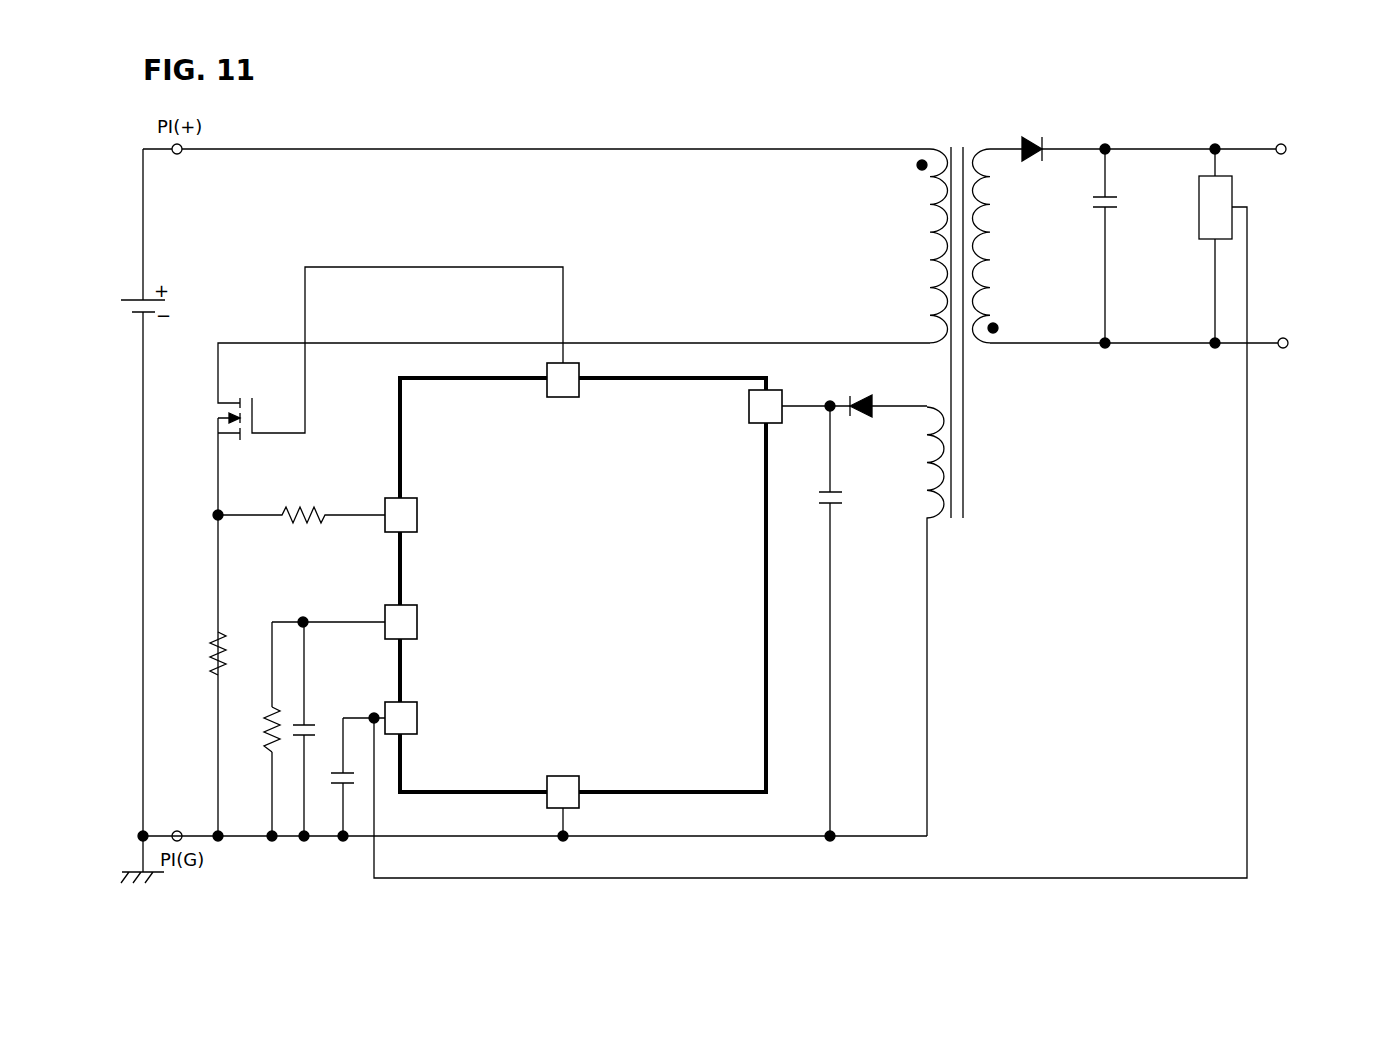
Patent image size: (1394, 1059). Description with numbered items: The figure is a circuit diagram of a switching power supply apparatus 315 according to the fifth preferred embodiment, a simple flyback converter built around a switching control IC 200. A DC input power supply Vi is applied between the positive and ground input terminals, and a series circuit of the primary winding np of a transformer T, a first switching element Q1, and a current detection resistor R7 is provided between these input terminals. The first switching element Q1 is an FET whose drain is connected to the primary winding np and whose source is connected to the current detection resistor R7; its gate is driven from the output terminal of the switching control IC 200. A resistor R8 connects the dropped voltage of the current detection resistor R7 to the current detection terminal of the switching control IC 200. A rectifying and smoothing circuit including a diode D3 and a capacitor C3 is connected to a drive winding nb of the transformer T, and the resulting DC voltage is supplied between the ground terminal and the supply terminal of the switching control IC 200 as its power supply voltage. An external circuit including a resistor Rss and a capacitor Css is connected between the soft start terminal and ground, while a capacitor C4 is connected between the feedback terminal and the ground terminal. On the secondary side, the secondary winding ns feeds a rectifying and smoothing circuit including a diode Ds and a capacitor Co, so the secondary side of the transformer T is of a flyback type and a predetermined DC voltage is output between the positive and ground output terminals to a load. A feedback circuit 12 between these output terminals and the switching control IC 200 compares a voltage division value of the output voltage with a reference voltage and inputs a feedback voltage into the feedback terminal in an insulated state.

The switching control IC 200 is at (676, 368).
The feedback circuit 12 is at (1240, 185).
The switching power supply apparatus 315 is at (1170, 219).
The transformer T is at (951, 459).
The first switching element Q1 is at (574, 551).
The current detection resistor R7 is at (203, 648).
The resistor R8 is at (301, 503).
The resistor Rss is at (254, 730).
The capacitor Css is at (315, 729).
The capacitor C4 is at (350, 777).
The capacitor C3 is at (843, 621).
The diode D3 is at (864, 420).
The diode Ds is at (1033, 163).
The capacitor Co is at (1113, 246).
The DC input power supply Vi is at (139, 293).
The primary winding np is at (927, 246).
The secondary winding ns is at (987, 246).
The drive winding nb is at (921, 621).